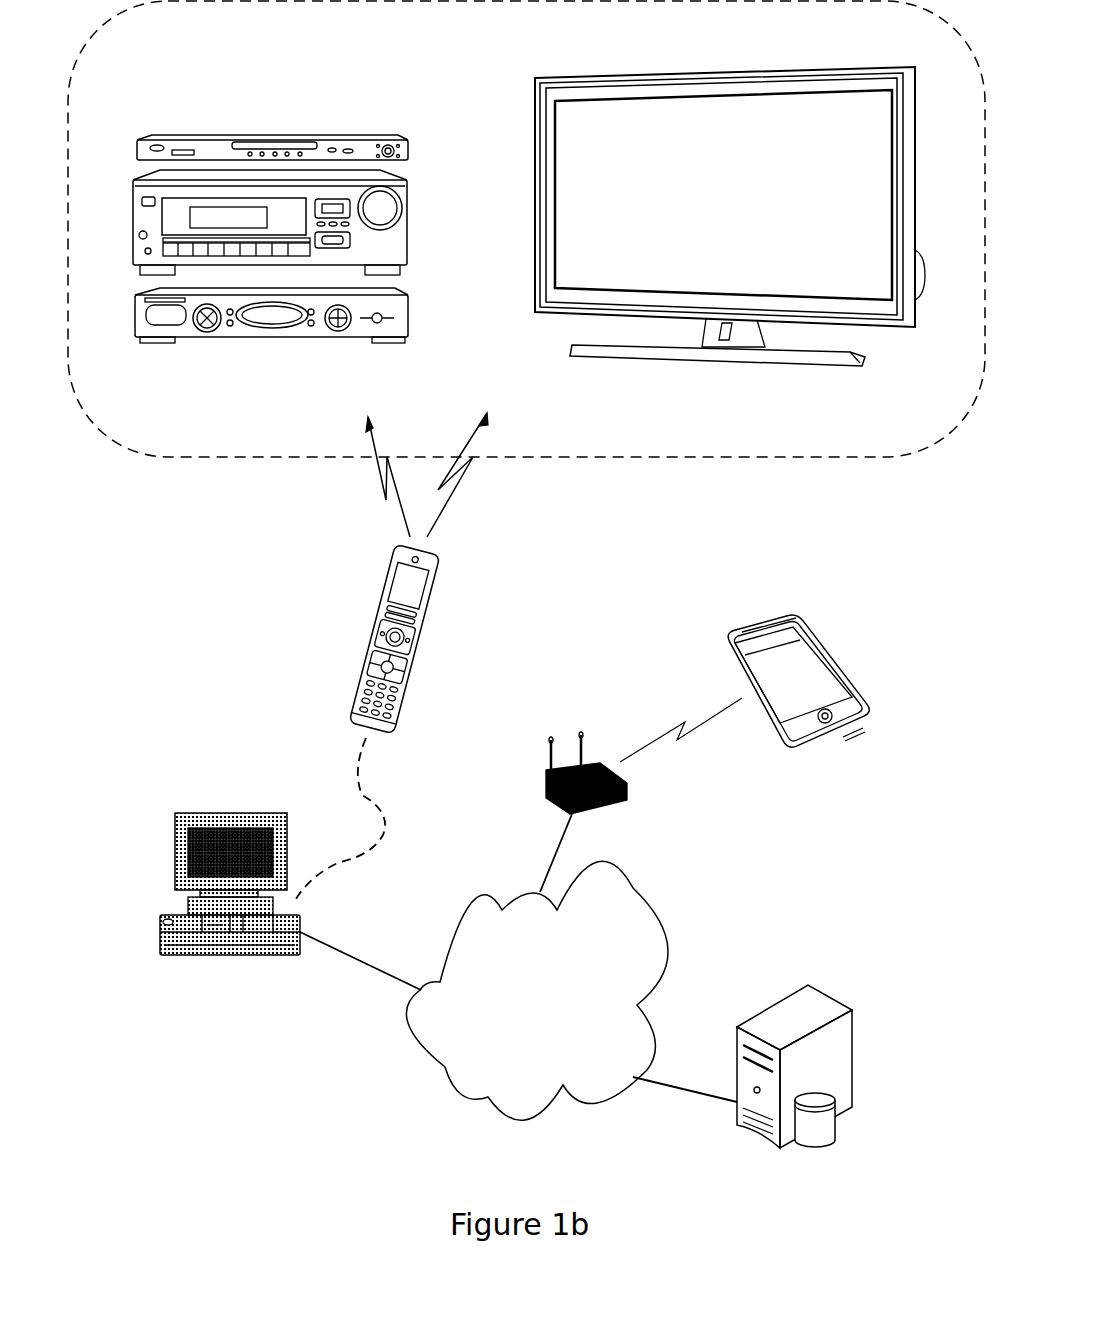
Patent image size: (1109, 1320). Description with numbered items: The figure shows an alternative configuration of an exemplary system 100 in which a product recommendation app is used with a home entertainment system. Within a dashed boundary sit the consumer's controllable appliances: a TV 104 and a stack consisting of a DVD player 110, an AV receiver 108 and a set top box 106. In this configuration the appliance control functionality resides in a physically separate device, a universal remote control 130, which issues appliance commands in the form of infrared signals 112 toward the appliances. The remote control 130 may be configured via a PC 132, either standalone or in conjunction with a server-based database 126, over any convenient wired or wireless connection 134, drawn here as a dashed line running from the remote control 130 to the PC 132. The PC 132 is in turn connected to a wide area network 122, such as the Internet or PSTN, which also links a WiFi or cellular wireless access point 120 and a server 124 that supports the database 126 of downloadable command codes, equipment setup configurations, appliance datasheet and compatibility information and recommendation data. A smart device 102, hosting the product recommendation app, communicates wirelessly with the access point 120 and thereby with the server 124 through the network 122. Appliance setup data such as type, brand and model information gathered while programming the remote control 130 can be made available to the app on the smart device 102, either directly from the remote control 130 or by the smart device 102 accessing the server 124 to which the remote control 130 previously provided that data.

The system 100 is at (253, 457).
The smart device 102 is at (852, 730).
The TV 104 is at (657, 72).
The set top box 106 is at (187, 340).
The AV receiver 108 is at (416, 226).
The DVD player 110 is at (205, 137).
The infrared signals 112 is at (397, 513).
The wireless access point 120 is at (613, 813).
The wide area network 122 is at (455, 1090).
The server 124 is at (830, 995).
The database 126 is at (823, 1147).
The universal remote control 130 is at (347, 740).
The PC 132 is at (205, 958).
The wired or wireless connection 134 is at (343, 857).